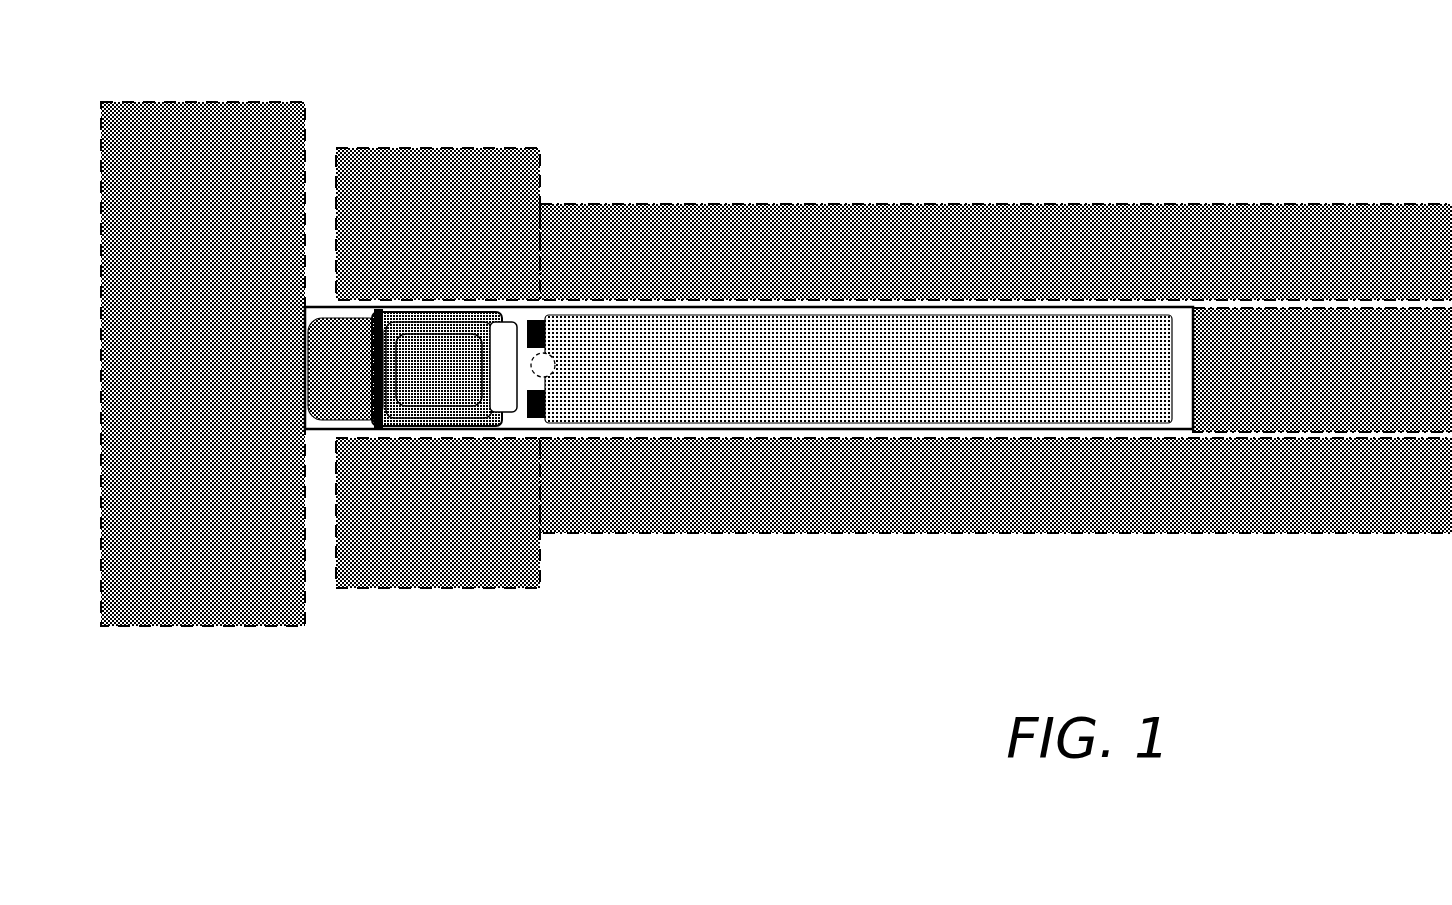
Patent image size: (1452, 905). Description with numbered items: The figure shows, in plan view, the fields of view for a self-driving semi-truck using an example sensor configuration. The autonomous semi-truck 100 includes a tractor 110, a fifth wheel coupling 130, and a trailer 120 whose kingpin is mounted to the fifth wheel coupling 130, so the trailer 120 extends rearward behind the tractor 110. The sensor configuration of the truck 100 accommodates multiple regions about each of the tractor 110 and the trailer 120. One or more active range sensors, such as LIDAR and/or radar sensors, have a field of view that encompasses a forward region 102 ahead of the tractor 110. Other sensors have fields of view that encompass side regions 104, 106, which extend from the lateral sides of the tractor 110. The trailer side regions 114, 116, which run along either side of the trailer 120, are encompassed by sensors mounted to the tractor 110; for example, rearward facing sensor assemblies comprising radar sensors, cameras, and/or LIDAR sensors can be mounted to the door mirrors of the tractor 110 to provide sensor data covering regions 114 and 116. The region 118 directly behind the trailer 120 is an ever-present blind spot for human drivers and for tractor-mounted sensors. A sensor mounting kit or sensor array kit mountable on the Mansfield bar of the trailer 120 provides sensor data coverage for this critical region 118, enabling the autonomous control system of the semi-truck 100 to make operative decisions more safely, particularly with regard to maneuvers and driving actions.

The autonomous semi-truck 100 is at (338, 54).
The forward region 102 is at (203, 364).
The side region 104 is at (438, 224).
The side region 106 is at (438, 513).
The tractor 110 is at (412, 369).
The trailer side region 114 is at (996, 252).
The trailer side region 116 is at (996, 485).
The region directly behind the trailer 118 is at (1322, 370).
The trailer 120 is at (849, 369).
The fifth wheel coupling 130 is at (552, 352).